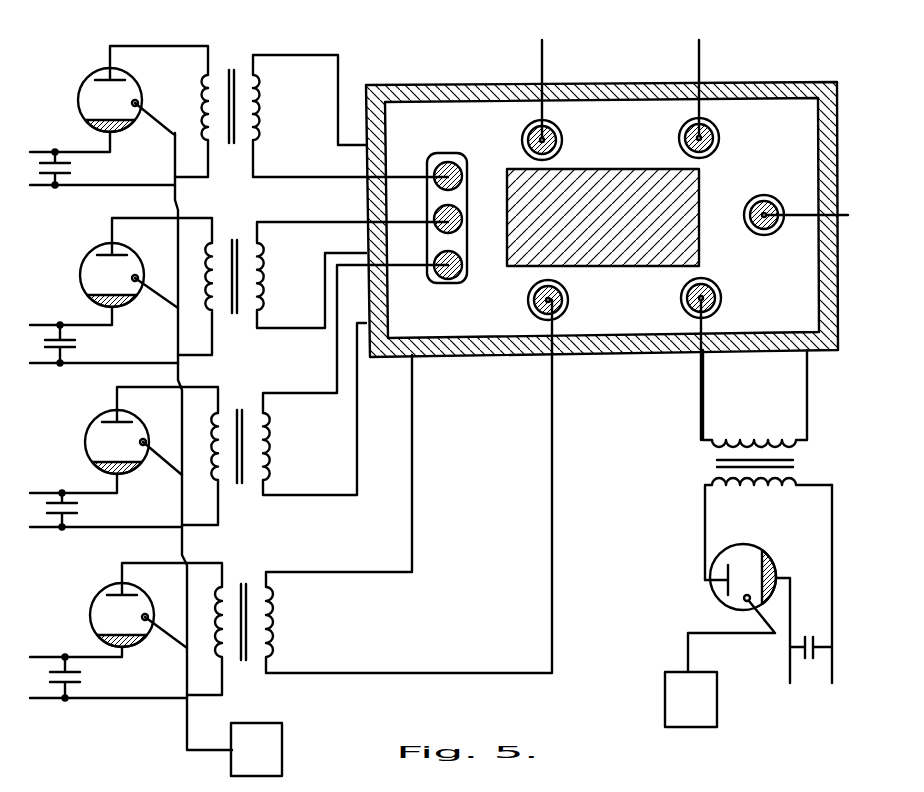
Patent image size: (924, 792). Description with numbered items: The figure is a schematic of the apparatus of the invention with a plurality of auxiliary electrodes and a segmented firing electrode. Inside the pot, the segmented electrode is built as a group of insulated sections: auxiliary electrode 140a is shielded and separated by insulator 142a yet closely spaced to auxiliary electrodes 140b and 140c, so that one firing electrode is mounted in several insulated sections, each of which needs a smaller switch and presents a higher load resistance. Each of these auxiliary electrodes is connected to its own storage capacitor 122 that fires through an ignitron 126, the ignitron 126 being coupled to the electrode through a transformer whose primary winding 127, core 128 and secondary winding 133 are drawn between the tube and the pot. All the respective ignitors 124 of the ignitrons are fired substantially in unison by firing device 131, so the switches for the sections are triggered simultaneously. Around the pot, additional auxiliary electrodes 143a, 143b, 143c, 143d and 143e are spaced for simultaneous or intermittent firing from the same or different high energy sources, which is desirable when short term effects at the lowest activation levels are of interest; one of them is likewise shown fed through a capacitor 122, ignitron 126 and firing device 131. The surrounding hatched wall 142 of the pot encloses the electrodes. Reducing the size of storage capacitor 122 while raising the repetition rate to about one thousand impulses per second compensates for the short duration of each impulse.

The storage capacitor 122 is at (90, 680).
The ignitor 124 is at (142, 101).
The ignitron 126 is at (80, 83).
The primary winding 127 is at (203, 123).
The transformer core 128 is at (232, 66).
The firing device 131 is at (705, 708).
The secondary winding 133 is at (262, 99).
The auxiliary electrode 140a is at (454, 162).
The auxiliary electrode 140b is at (458, 212).
The auxiliary electrode 140c is at (460, 258).
The shielded chamber 142 is at (721, 300).
The insulator 142a is at (466, 282).
The auxiliary electrode 143a is at (569, 298).
The auxiliary electrode 143b is at (716, 290).
The auxiliary electrode 143c is at (766, 203).
The auxiliary electrode 143d is at (720, 136).
The auxiliary electrode 143e is at (563, 140).